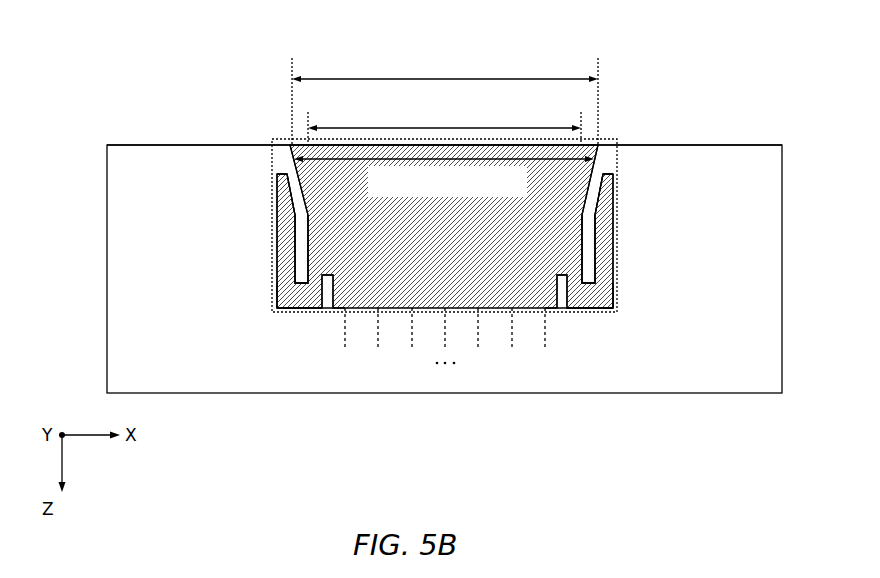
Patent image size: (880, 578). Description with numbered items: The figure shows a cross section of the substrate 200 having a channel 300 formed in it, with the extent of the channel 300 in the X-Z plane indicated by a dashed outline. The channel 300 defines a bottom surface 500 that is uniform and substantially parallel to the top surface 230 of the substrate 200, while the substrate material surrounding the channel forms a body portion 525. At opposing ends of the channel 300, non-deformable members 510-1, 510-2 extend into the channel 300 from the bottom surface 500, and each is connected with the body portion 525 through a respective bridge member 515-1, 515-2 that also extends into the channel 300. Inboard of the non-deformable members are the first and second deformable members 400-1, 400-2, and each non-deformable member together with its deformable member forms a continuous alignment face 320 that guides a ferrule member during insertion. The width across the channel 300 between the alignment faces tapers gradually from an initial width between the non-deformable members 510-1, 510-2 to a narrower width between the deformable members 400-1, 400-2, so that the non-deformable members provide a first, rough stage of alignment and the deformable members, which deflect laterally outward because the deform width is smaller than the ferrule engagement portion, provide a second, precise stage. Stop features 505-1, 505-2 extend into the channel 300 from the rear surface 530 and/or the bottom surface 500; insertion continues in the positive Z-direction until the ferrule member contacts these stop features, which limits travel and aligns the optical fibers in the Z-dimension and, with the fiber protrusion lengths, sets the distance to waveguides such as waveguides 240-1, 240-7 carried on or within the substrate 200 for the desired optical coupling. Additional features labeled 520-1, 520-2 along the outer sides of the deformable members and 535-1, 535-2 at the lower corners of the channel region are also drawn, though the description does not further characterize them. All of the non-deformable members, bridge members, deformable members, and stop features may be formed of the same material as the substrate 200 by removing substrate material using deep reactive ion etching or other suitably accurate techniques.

The substrate 200 is at (661, 84).
The top surface 230 is at (187, 373).
The body portion 525 is at (157, 318).
The bottom surface 500 is at (463, 226).
The first deformable member 400-1 is at (298, 217).
The second deformable member 400-2 is at (589, 217).
The first bridge member 515-1 is at (283, 152).
The second bridge member 515-2 is at (606, 152).
The first non-deformable member 510-1 is at (291, 185).
The second non-deformable member 510-2 is at (598, 185).
The first arm outer surface 520-1 is at (286, 248).
The second arm outer surface 520-2 is at (603, 248).
The first base portion 535-1 is at (276, 287).
The second base portion 535-2 is at (614, 287).
The alignment face 320 is at (310, 243).
The first stop feature 505-1 is at (329, 279).
The second stop feature 505-2 is at (561, 279).
The rear surface 530 is at (301, 311).
The channel 300 is at (603, 312).
The waveguide 240-1 is at (345, 341).
The waveguide 240-7 is at (545, 341).